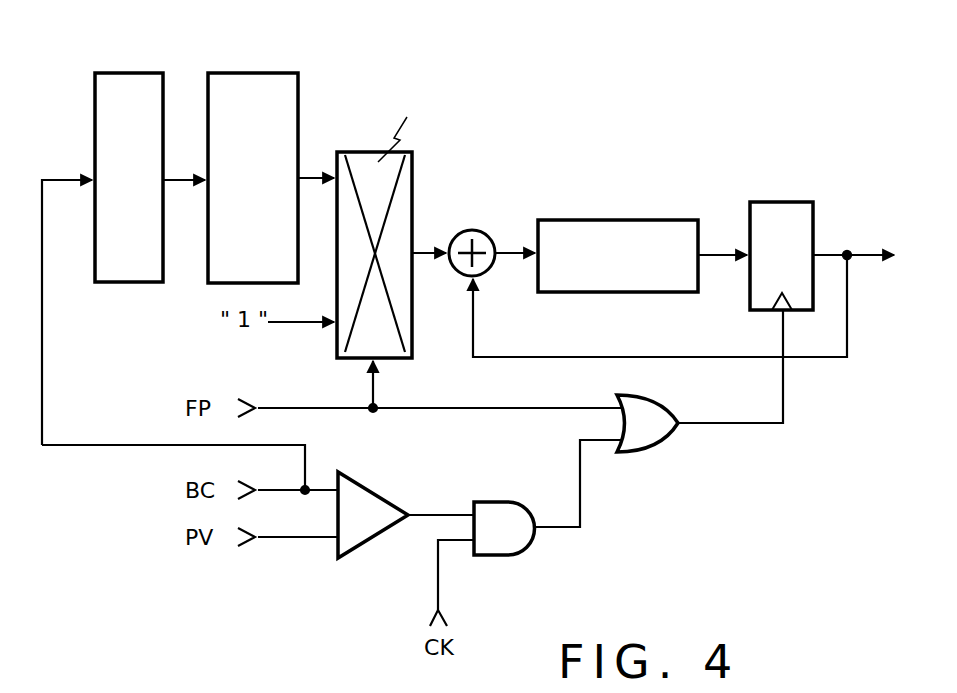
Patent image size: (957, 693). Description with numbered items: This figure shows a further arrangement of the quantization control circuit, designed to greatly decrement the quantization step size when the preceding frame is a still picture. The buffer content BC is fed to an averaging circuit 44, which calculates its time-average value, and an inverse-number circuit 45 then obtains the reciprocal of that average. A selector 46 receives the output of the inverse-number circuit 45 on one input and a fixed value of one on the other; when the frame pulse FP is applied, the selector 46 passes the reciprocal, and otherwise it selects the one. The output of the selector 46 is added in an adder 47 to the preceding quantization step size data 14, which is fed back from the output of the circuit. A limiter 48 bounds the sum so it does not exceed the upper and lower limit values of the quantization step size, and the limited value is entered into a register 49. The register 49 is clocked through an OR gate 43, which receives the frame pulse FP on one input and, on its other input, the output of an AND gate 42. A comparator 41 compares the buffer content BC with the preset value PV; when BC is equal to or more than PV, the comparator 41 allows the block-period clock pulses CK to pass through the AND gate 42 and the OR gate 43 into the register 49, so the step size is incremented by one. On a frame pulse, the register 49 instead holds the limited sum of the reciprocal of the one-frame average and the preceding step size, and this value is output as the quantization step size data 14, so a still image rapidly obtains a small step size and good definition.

The averaging circuit 44 is at (130, 72).
The inverse-number circuit 45 is at (250, 72).
The selector 46 is at (370, 152).
The adder 47 is at (472, 231).
The limiter 48 is at (612, 218).
The register 49 is at (780, 200).
The quantization step size data 14 is at (868, 250).
The comparator 41 is at (378, 494).
The AND gate 42 is at (490, 500).
The OR gate 43 is at (648, 455).